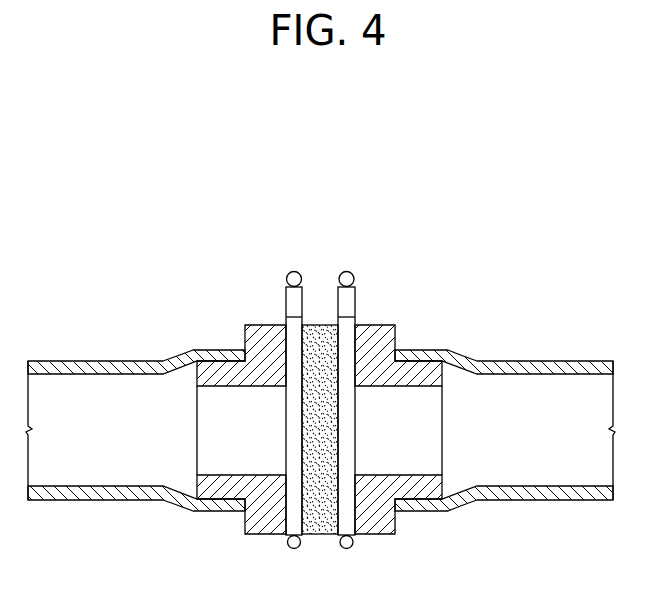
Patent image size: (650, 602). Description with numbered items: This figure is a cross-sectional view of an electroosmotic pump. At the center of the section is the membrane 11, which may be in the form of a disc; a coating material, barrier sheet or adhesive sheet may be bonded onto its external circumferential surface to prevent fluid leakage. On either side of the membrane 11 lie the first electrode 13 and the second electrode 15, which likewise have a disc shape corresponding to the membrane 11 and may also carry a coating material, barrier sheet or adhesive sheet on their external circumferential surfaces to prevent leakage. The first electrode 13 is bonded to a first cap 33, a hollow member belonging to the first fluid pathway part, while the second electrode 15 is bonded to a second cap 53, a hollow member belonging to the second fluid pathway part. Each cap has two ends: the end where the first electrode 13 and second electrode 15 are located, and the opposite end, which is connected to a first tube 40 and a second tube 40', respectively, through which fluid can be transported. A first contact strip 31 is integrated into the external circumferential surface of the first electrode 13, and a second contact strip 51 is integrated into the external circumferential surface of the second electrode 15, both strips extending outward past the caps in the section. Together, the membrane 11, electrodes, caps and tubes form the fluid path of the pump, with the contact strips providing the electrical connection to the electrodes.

The membrane 11 is at (322, 333).
The first electrode 13 is at (290, 518).
The second electrode 15 is at (347, 518).
The first contact strip 31 is at (293, 293).
The first cap 33 is at (252, 338).
The first tube 40 is at (135, 412).
The second tube 40' is at (505, 411).
The second contact strip 51 is at (348, 293).
The second cap 53 is at (388, 338).